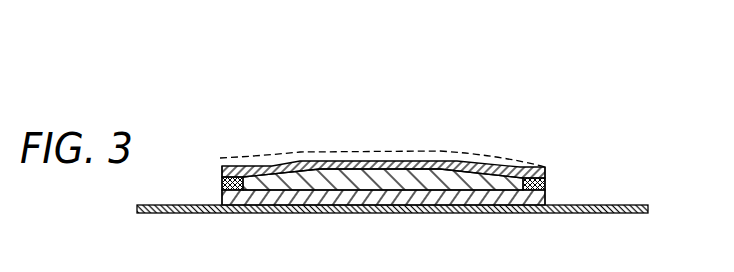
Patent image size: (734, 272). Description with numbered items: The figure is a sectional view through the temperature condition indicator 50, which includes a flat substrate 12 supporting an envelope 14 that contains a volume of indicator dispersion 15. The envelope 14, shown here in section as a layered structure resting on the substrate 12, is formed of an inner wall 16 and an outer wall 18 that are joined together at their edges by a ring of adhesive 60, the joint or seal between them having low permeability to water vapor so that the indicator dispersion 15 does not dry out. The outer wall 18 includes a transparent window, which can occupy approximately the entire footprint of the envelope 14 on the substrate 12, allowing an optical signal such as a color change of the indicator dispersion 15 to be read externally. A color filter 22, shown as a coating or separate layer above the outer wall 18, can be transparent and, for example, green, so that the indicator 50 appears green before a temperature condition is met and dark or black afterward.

The substrate 12 is at (630, 205).
The envelope 14 is at (258, 166).
The indicator dispersion 15 is at (453, 178).
The inner wall 16 is at (389, 198).
The outer wall 18 is at (356, 161).
The color filter 22 is at (290, 150).
The temperature condition indicator 50 is at (458, 82).
The ring of adhesive 60 is at (533, 180).